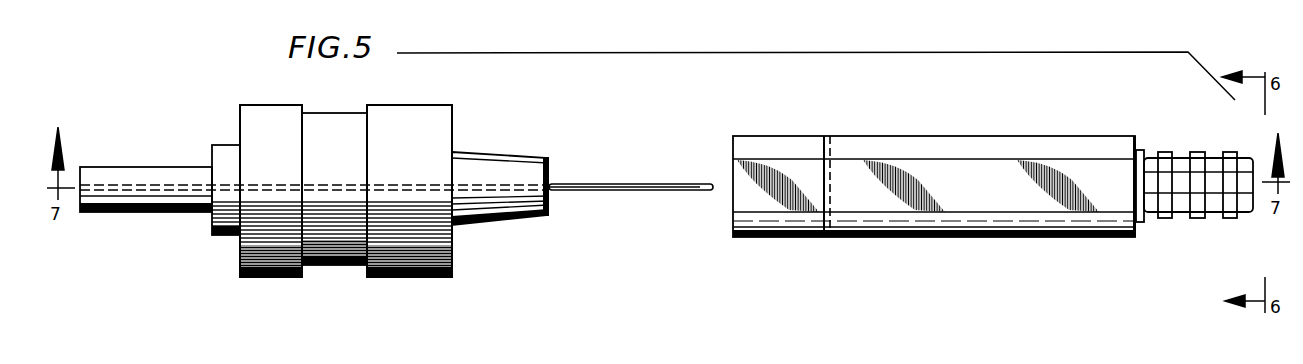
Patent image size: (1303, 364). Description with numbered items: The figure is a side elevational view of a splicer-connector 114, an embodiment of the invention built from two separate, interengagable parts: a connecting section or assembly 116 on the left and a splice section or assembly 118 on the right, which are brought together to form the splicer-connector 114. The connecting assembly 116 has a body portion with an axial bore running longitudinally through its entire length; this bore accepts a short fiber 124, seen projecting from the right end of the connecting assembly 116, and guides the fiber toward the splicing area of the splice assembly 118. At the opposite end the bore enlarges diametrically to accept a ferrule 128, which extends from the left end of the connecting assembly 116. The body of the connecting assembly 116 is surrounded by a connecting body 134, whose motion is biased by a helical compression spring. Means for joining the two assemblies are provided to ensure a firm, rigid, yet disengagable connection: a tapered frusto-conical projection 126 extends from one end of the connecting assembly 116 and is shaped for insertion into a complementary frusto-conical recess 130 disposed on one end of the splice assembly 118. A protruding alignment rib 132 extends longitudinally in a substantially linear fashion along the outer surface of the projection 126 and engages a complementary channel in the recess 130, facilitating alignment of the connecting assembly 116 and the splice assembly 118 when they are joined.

The splicer-connector 114 is at (876, 118).
The connecting section or assembly 116 is at (326, 225).
The splice section or assembly 118 is at (985, 275).
The short fiber 124 is at (646, 191).
The frusto-conical projection 126 is at (490, 165).
The ferrule 128 is at (111, 214).
The frusto-conical recess 130 is at (489, 224).
The alignment rib 132 is at (543, 156).
The connecting body 134 is at (251, 278).